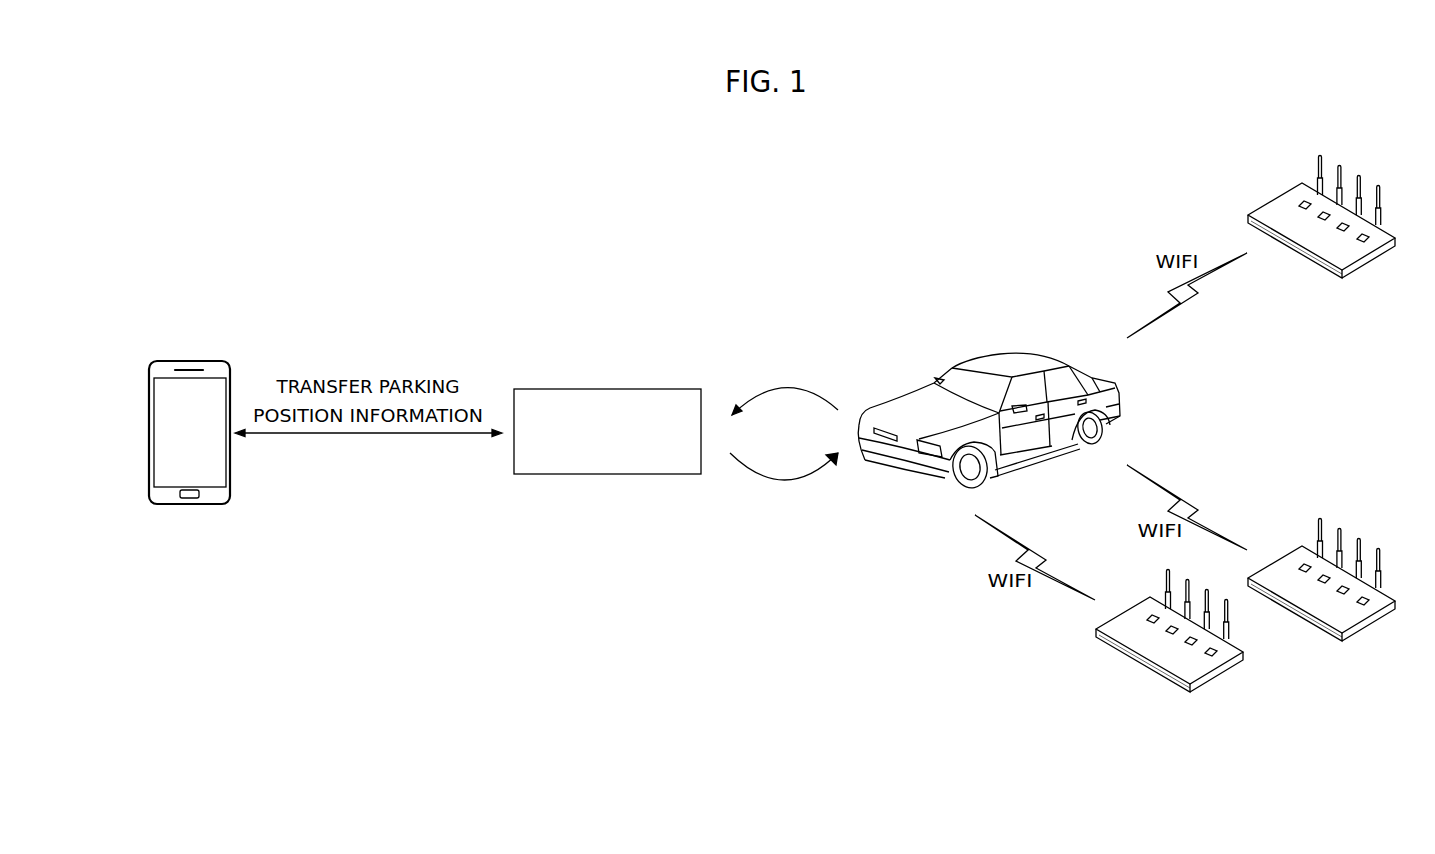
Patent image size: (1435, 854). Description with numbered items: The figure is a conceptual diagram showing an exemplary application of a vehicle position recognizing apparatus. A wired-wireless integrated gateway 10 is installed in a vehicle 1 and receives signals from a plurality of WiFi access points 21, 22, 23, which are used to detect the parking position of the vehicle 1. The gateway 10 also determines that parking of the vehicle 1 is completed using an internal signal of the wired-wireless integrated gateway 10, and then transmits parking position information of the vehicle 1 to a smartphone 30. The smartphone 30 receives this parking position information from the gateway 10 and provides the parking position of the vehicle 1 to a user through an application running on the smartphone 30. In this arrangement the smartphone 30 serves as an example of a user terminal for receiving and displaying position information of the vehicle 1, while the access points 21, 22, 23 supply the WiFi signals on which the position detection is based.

The vehicle 1 is at (993, 352).
The wired-wireless integrated gateway 10 is at (607, 389).
The WiFi access point 21 is at (1276, 194).
The WiFi access point 22 is at (1277, 554).
The WiFi access point 23 is at (1115, 647).
The smartphone 30 is at (190, 360).